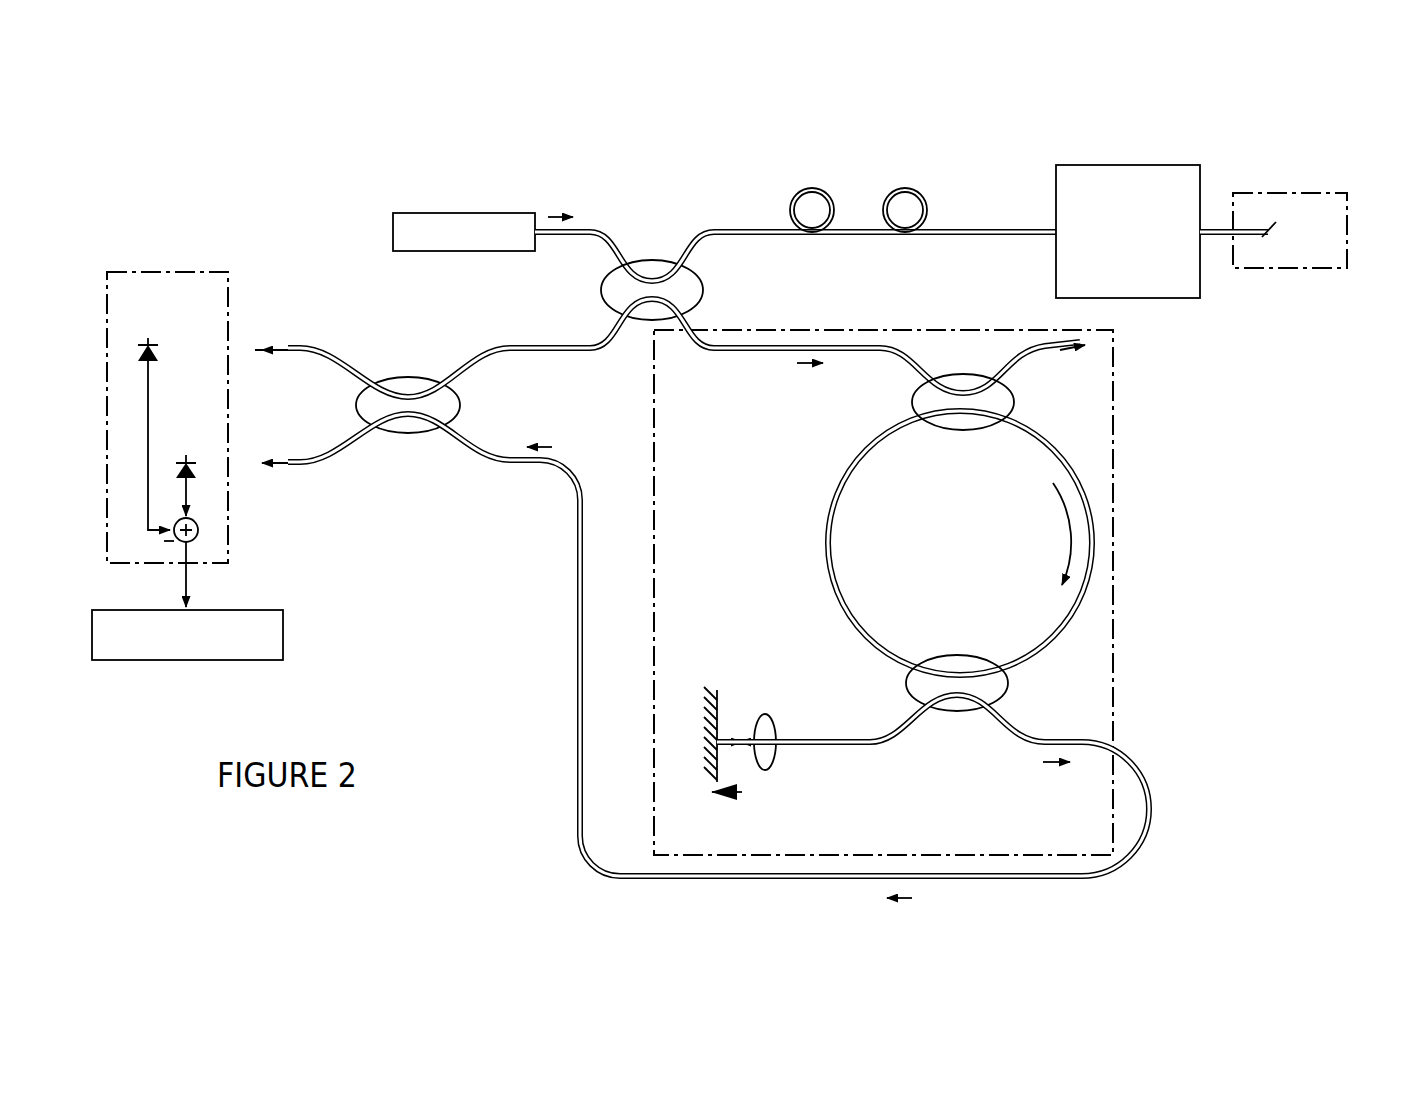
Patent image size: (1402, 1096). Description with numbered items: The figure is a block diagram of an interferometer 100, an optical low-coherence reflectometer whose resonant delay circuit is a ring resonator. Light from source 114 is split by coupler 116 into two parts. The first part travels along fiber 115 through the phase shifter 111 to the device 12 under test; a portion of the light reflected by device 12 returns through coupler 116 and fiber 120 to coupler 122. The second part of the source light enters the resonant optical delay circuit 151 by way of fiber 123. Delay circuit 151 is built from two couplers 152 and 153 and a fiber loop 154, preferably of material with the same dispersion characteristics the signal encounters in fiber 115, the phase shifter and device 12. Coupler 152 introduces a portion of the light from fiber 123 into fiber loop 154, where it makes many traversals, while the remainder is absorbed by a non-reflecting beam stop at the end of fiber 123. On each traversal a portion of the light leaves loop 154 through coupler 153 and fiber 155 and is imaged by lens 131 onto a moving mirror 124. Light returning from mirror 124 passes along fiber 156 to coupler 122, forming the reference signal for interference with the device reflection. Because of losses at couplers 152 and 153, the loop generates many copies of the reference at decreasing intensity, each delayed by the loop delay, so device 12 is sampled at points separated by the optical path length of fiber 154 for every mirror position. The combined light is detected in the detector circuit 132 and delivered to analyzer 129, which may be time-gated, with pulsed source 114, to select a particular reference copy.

The interferometer 100 is at (400, 125).
The light source 114 is at (400, 221).
The coupler 116 is at (652, 268).
The fiber 115 is at (968, 228).
The phase shifter 111 is at (1150, 288).
The device 12 is at (1325, 250).
The detector circuit 132 is at (220, 303).
The analyzer 129 is at (282, 652).
The coupler 122 is at (410, 382).
The fiber 120 is at (523, 352).
The resonant optical delay circuit 151 is at (1103, 447).
The fiber 123 is at (720, 343).
The fiber loop 154 is at (822, 532).
The coupler 152 is at (958, 428).
The coupler 153 is at (950, 658).
The moving mirror 124 is at (717, 700).
The lens 131 is at (770, 720).
The fiber 155 is at (813, 730).
The fiber 156 is at (1037, 878).